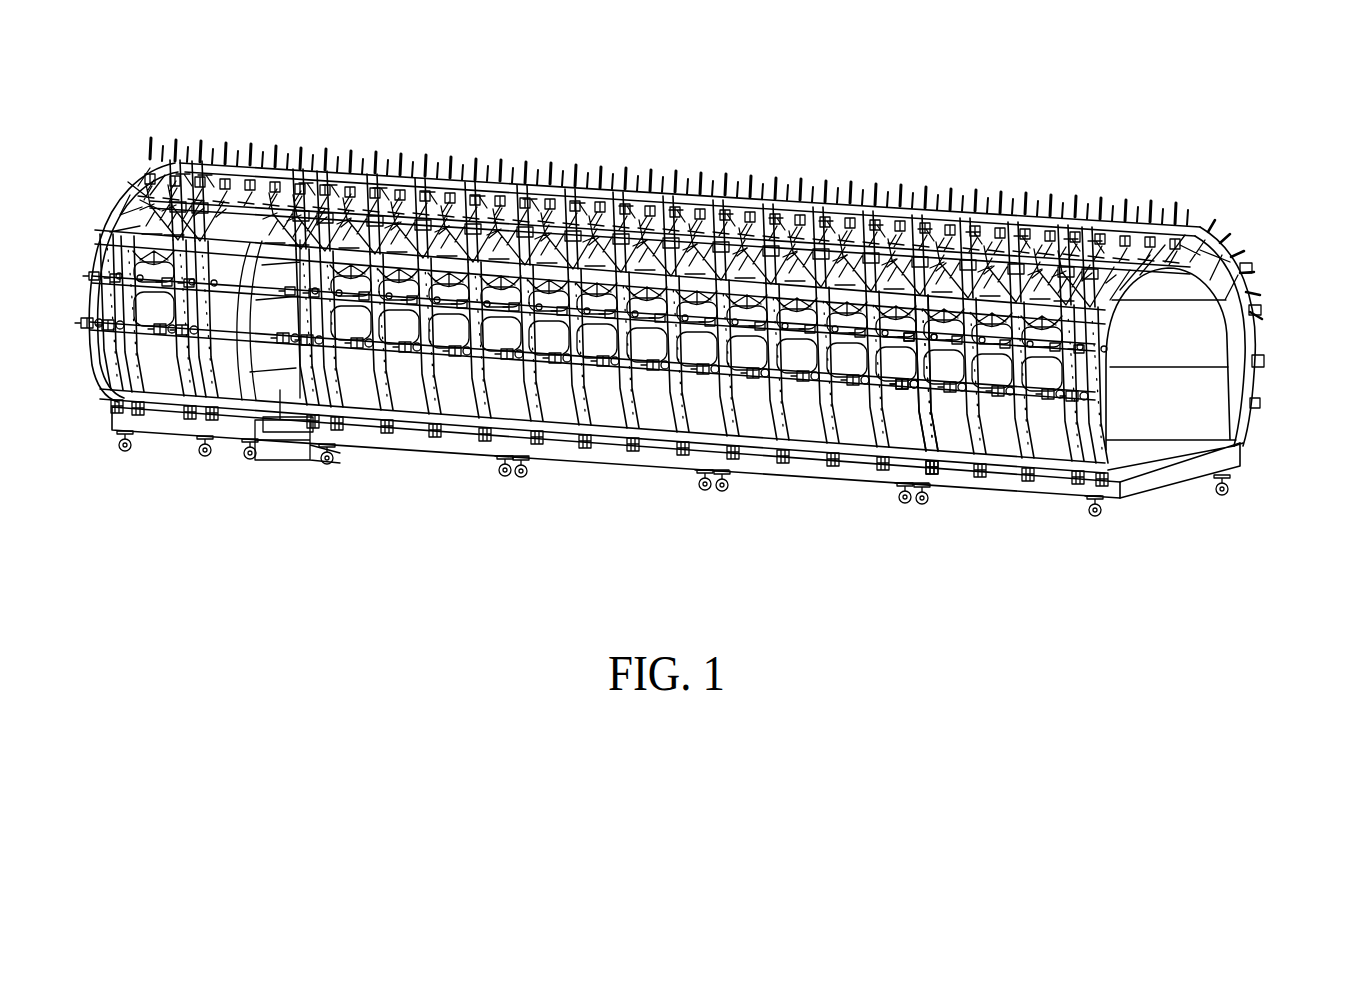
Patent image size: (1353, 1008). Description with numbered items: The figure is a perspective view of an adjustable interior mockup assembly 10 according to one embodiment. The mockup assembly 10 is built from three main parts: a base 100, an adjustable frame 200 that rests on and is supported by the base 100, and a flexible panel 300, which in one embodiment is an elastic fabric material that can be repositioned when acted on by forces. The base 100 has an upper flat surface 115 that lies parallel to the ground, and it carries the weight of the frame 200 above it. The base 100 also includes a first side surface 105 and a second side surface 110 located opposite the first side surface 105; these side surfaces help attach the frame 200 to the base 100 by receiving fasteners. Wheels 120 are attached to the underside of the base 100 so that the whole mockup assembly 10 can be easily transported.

The adjustable interior mockup assembly 10 is at (1003, 152).
The base 100 is at (815, 490).
The first side surface 105 is at (1062, 483).
The second side surface 110 is at (1240, 466).
The upper flat surface 115 is at (1125, 462).
The wheels 120 is at (496, 474).
The adjustable frame 200 is at (548, 160).
The flexible panel 300 is at (914, 420).